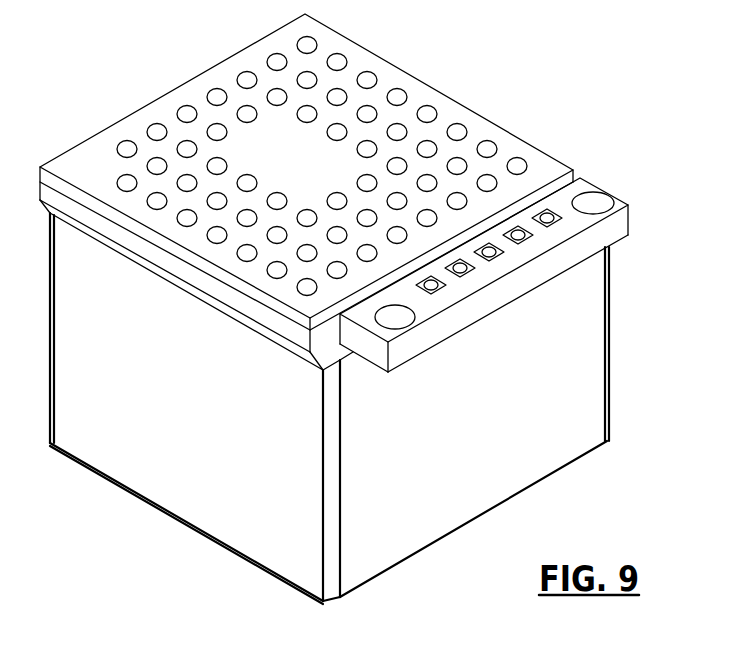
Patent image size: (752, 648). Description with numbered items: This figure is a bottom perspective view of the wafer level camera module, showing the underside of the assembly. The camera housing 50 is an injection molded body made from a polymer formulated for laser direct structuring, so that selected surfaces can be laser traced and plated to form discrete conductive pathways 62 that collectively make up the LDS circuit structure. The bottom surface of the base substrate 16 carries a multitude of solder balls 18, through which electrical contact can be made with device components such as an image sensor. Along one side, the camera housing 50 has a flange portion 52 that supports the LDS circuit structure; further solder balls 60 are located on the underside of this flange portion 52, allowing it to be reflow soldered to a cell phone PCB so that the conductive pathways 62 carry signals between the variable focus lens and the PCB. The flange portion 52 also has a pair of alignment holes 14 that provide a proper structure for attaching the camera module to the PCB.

The alignment holes 14 is at (594, 200).
The base substrate 16 is at (52, 193).
The solder balls 18 is at (516, 165).
The camera housing 50 is at (190, 491).
The flange portion 52 is at (620, 229).
The solder balls 60 is at (487, 247).
The conductive pathways 62 is at (418, 278).